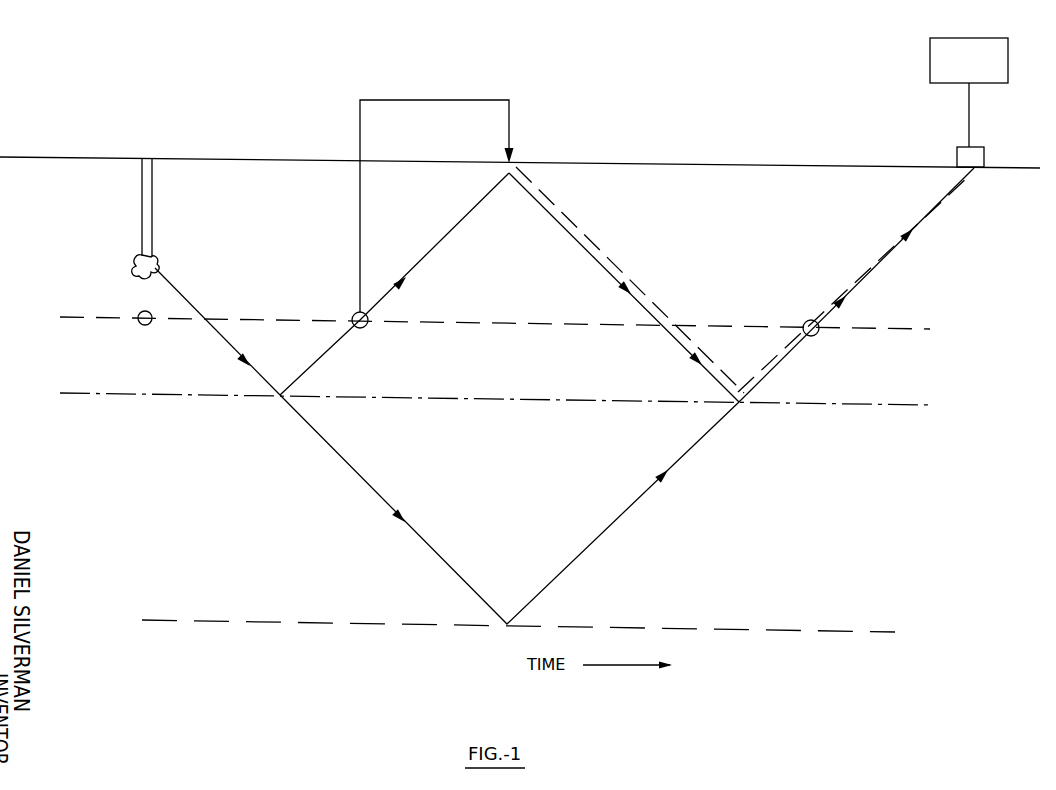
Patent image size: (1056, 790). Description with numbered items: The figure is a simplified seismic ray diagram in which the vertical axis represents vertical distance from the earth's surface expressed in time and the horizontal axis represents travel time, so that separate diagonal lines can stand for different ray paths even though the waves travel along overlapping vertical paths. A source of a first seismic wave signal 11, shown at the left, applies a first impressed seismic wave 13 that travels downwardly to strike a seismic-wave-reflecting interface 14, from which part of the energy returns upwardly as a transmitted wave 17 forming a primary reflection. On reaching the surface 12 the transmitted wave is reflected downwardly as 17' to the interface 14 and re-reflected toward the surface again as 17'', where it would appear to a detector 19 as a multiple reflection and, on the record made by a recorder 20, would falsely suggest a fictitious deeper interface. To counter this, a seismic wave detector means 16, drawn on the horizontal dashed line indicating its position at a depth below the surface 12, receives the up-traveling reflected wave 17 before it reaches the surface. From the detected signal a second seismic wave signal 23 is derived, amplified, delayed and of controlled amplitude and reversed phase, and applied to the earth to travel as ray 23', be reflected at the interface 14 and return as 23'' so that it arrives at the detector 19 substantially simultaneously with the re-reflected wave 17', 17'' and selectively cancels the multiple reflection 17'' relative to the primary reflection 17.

The source of a first seismic wave signal 11 is at (133, 262).
The surface 12 is at (95, 157).
The first impressed seismic wave 13 is at (183, 296).
The seismic-wave-reflecting interface 14 is at (637, 401).
The seismic wave detector means 16 is at (150, 326).
The transmitted wave 17 is at (509, 398).
The downwardly reflected transmitted wave 17' is at (624, 287).
The multiple reflection 17'' is at (856, 285).
The detector 19 is at (957, 160).
The recorder 20 is at (969, 92).
The second seismic wave signal 23 is at (437, 206).
The ray of the second seismic wave signal 23' is at (630, 280).
The returning second seismic wave signal 23'' is at (853, 284).